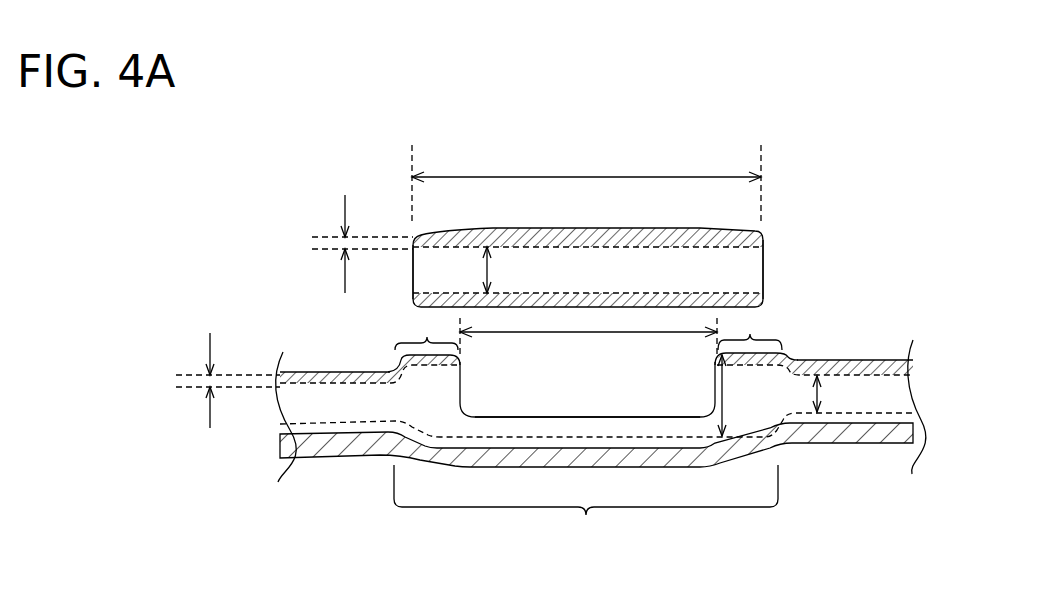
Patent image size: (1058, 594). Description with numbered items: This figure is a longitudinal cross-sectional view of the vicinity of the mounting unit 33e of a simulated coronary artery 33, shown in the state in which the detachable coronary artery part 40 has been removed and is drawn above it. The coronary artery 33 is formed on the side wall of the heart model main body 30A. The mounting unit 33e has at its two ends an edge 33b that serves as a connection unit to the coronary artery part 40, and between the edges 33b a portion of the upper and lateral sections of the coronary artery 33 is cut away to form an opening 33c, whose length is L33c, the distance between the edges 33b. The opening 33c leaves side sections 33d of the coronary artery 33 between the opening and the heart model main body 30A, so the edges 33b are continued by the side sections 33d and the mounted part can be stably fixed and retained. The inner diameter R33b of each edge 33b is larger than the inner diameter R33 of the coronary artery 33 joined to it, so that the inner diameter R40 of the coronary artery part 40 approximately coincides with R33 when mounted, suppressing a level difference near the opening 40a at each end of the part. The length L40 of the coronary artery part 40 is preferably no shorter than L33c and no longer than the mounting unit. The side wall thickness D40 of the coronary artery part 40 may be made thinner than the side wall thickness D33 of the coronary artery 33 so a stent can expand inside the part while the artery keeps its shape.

The coronary artery part 40 is at (745, 256).
The opening 40a is at (765, 267).
The coronary artery 33 is at (890, 400).
The edge 33b is at (593, 337).
The opening 33c is at (517, 388).
The side section 33d is at (645, 428).
The mounting unit 33e is at (586, 508).
The heart model main body 30A is at (876, 435).
The length of the coronary artery part L40 is at (586, 180).
The thickness of the side wall of the coronary artery part D40 is at (337, 244).
The inner diameter of the coronary artery part R40 is at (516, 270).
The thickness of the side wall of the coronary artery D33 is at (201, 380).
The length of the opening L33c is at (588, 343).
The inner diameter of the edge R33b is at (758, 395).
The inner diameter of the coronary artery R33 is at (844, 394).